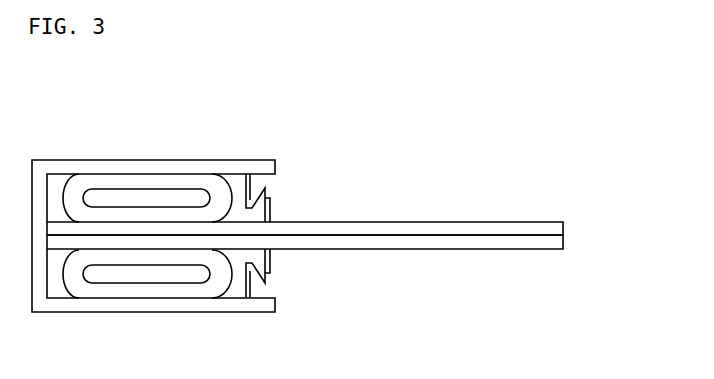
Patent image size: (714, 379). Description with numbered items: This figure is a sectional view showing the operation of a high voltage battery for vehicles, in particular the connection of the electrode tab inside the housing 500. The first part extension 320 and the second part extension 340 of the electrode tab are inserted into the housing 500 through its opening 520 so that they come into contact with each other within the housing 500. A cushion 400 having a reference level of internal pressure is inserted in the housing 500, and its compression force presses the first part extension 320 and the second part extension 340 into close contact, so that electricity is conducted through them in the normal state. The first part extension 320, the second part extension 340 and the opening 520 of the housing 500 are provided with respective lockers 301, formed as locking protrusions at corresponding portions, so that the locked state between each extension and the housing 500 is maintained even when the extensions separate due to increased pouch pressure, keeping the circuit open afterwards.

The housing 500 is at (103, 163).
The cushion 400 is at (185, 177).
The second part extension 340 is at (517, 225).
The first part extension 320 is at (517, 247).
The opening 520 is at (280, 195).
The locker 301 is at (283, 286).